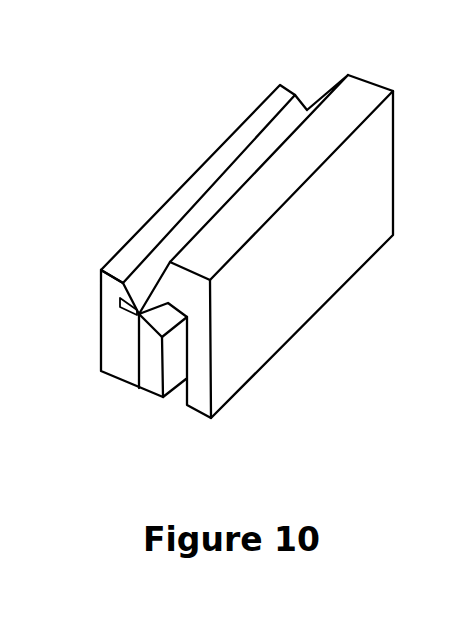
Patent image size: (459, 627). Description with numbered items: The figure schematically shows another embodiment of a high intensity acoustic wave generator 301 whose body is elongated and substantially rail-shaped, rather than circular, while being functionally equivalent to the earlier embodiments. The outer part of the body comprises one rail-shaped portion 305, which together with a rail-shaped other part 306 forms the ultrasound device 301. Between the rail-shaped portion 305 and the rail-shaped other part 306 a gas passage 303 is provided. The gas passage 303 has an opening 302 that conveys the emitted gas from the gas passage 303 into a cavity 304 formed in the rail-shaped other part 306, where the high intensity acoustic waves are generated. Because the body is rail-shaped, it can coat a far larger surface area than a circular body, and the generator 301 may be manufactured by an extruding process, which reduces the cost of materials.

The high intensity acoustic wave generator 301 is at (282, 82).
The opening 302 is at (313, 102).
The gas passage 303 is at (173, 398).
The cavity 304 is at (140, 322).
The rail-shaped portion 305 is at (195, 355).
The rail-shaped other part 306 is at (103, 362).